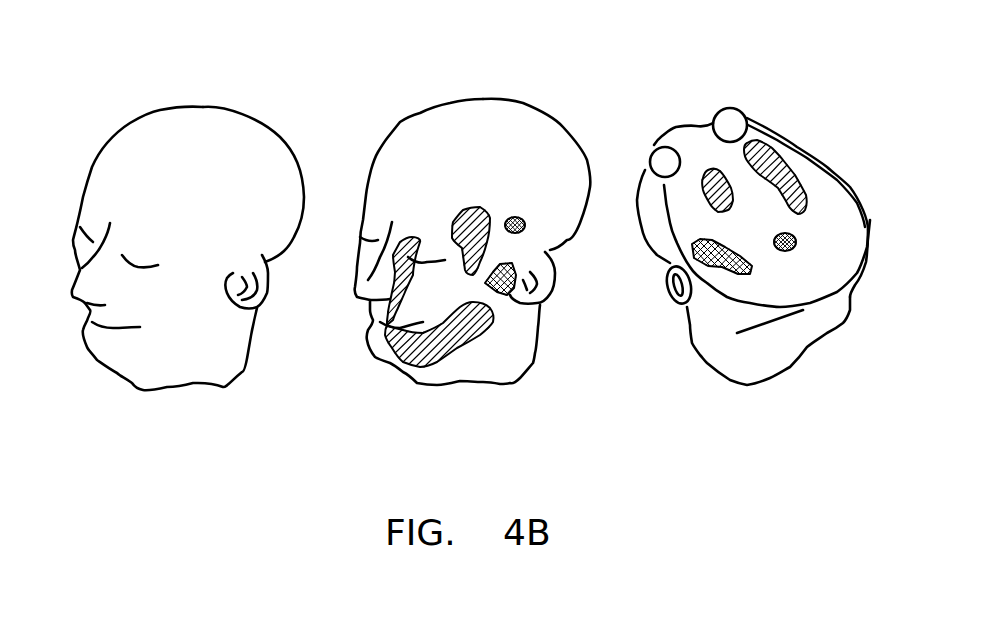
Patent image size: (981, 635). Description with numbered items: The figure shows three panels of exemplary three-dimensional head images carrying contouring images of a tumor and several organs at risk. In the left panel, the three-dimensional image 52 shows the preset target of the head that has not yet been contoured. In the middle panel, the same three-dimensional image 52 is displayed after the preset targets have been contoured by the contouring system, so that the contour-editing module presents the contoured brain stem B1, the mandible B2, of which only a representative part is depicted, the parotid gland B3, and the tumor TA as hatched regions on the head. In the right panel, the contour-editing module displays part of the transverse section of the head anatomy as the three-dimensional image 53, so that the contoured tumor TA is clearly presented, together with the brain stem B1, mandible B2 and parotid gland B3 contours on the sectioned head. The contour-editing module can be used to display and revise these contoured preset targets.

The 3D image 52 is at (200, 106).
The 3D image 53 is at (769, 122).
The brain stem B1 is at (478, 211).
The mandible B2 is at (407, 228).
The parotid gland B3 is at (502, 296).
The tumor TA is at (523, 217).